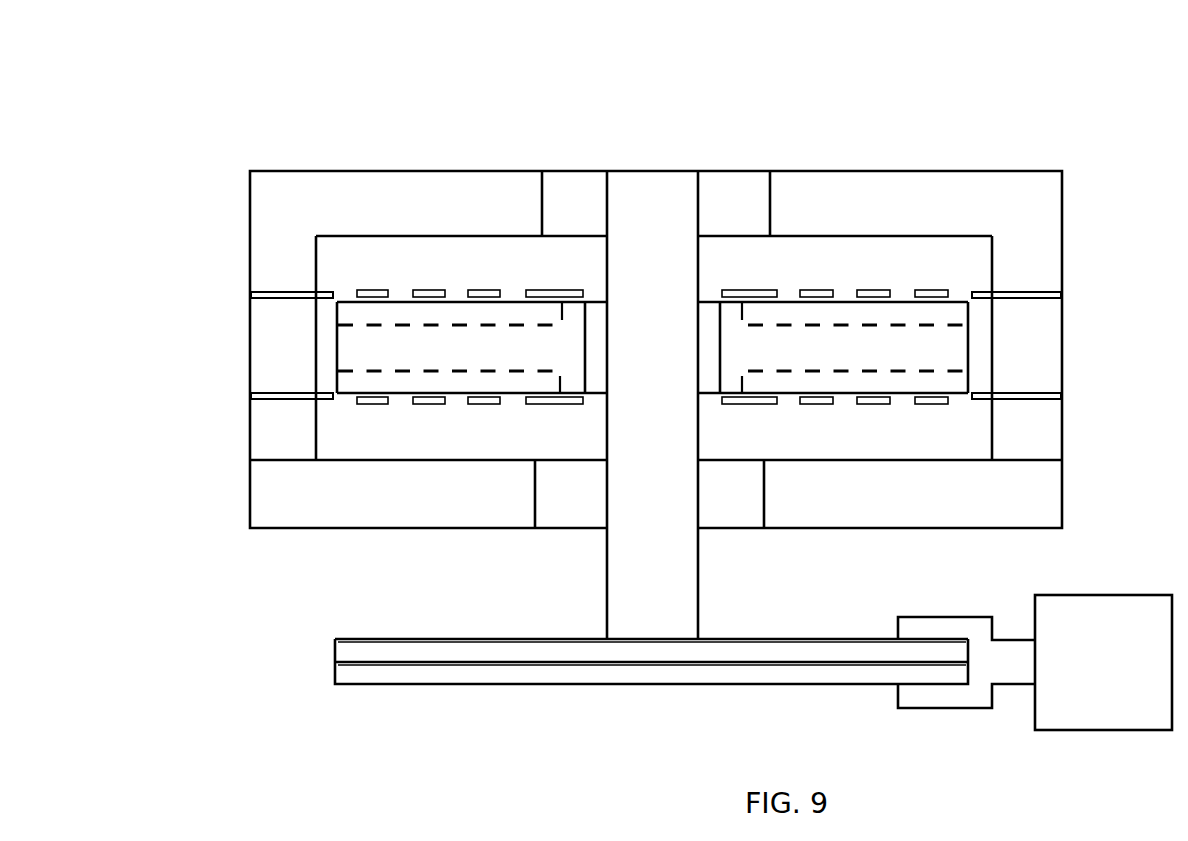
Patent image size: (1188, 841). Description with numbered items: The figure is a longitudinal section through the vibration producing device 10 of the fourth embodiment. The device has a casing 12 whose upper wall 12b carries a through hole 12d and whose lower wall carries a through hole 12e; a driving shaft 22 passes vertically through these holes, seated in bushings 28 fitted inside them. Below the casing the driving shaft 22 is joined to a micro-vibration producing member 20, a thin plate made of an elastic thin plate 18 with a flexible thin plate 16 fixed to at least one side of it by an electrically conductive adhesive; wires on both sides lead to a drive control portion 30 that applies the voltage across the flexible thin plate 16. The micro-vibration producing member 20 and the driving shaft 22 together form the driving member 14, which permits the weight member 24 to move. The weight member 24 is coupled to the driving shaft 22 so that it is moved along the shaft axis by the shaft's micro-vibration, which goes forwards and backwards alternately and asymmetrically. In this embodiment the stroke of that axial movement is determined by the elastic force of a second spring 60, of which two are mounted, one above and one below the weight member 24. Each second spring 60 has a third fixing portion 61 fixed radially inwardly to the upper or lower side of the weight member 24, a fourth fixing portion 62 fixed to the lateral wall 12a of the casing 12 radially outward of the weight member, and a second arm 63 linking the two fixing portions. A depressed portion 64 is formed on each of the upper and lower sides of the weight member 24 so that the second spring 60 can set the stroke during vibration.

The vibration producing device 10 is at (331, 128).
The casing 12 is at (1015, 192).
The lateral wall 12a is at (1025, 268).
The upper wall 12b is at (835, 197).
The through hole 12d is at (568, 190).
The through hole 12e is at (750, 500).
The driving member 14 is at (570, 725).
The flexible thin plate 16 is at (373, 673).
The elastic thin plate 18 is at (435, 650).
The micro-vibration producing member 20 is at (362, 777).
The driving shaft 22 is at (652, 217).
The weight member 24 is at (348, 345).
The bushing 28 is at (722, 185).
The drive control portion 30 is at (1088, 638).
The second spring 60 is at (308, 293).
The third fixing portion 61 is at (562, 398).
The fourth fixing portion 62 is at (282, 398).
The second arm 63 is at (412, 430).
The depressed portion 64 is at (458, 325).